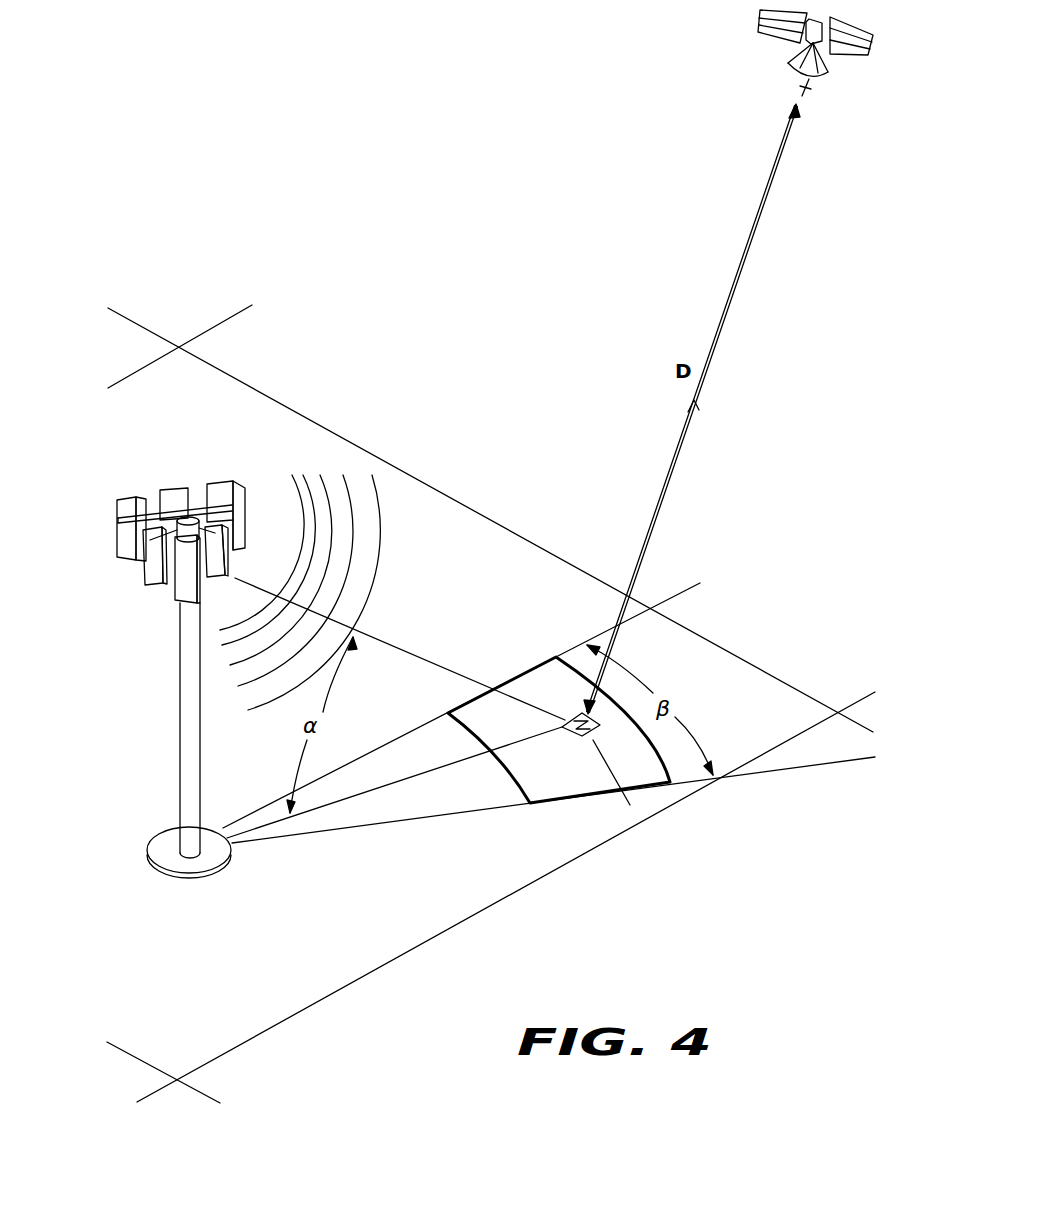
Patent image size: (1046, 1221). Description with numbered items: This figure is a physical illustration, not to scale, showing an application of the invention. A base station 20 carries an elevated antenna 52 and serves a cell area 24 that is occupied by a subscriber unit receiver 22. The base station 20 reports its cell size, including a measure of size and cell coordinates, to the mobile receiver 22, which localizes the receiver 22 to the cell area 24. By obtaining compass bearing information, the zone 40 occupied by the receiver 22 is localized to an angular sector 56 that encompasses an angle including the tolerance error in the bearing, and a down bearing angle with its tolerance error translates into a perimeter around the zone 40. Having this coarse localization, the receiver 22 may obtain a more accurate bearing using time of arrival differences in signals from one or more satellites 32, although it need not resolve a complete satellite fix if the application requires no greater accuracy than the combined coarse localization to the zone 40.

The base station 20 is at (180, 717).
The subscriber unit receiver 22 is at (575, 738).
The cell area 24 is at (508, 896).
The satellite 32 is at (762, 21).
The zone 40 is at (541, 661).
The elevated antenna 52 is at (218, 483).
The angular sector 56 is at (776, 765).